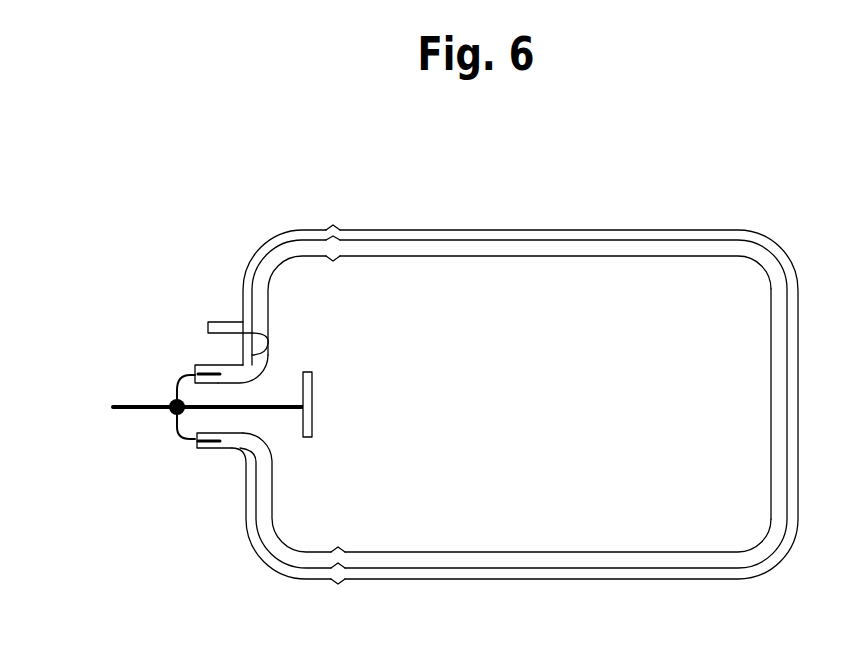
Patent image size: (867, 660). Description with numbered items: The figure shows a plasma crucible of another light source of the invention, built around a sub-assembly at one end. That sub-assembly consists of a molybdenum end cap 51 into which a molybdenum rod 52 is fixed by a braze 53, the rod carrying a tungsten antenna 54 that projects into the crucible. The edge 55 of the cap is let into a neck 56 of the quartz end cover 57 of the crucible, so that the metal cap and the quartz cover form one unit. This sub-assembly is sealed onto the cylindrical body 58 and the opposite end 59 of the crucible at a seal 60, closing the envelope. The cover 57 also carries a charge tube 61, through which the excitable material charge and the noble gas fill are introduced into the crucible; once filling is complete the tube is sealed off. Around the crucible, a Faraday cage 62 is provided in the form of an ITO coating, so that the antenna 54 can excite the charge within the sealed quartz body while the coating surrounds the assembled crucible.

The molybdenum end cap 51 is at (178, 432).
The molybdenum rod 52 is at (137, 405).
The braze 53 is at (172, 400).
The tungsten antenna 54 is at (308, 438).
The edge of the cap 55 is at (207, 367).
The neck 56 is at (235, 443).
The quartz end cover 57 is at (278, 270).
The cylindrical body 58 is at (598, 247).
The opposite end 59 is at (780, 402).
The seal 60 is at (333, 229).
The charge tube 61 is at (225, 331).
The Faraday cage 62 is at (507, 229).